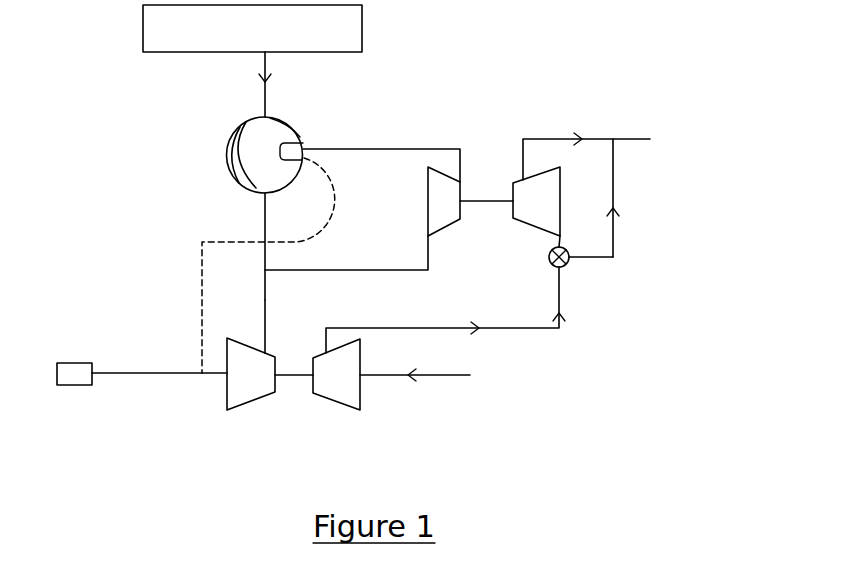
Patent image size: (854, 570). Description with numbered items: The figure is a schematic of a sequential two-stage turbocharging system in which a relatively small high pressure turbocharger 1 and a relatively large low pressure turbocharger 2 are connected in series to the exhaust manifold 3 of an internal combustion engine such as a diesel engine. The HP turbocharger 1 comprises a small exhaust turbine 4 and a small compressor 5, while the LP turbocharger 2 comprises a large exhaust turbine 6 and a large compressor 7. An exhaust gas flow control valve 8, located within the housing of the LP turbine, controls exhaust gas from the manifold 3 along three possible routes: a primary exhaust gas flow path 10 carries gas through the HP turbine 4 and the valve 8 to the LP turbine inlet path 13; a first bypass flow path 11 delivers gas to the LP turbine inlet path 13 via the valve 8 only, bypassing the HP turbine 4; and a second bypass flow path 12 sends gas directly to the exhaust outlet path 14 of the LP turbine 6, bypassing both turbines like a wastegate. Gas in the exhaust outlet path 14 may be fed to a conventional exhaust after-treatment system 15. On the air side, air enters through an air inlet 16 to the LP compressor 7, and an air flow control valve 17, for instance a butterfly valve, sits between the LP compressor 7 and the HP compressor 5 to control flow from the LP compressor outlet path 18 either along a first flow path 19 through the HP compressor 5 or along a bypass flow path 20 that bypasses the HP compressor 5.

The high pressure turbocharger 1 is at (488, 134).
The low pressure turbocharger 2 is at (292, 408).
The exhaust manifold 3 is at (251, 42).
The exhaust turbine 4 is at (439, 216).
The compressor 5 is at (530, 216).
The exhaust turbine 6 is at (236, 389).
The compressor 7 is at (330, 389).
The exhaust gas flow control valve 8 is at (226, 148).
The primary exhaust gas flow path 10 is at (357, 149).
The first bypass flow path 11 is at (265, 212).
The second bypass flow path 12 is at (203, 282).
The LP turbine inlet path 13 is at (265, 332).
The exhaust outlet path 14 is at (156, 374).
The exhaust after-treatment system 15 is at (74, 385).
The air inlet 16 is at (434, 375).
The air flow control valve 17 is at (565, 267).
The LP compressor outlet path 18 is at (538, 328).
The first flow path 19 is at (567, 249).
The bypass flow path 20 is at (614, 237).